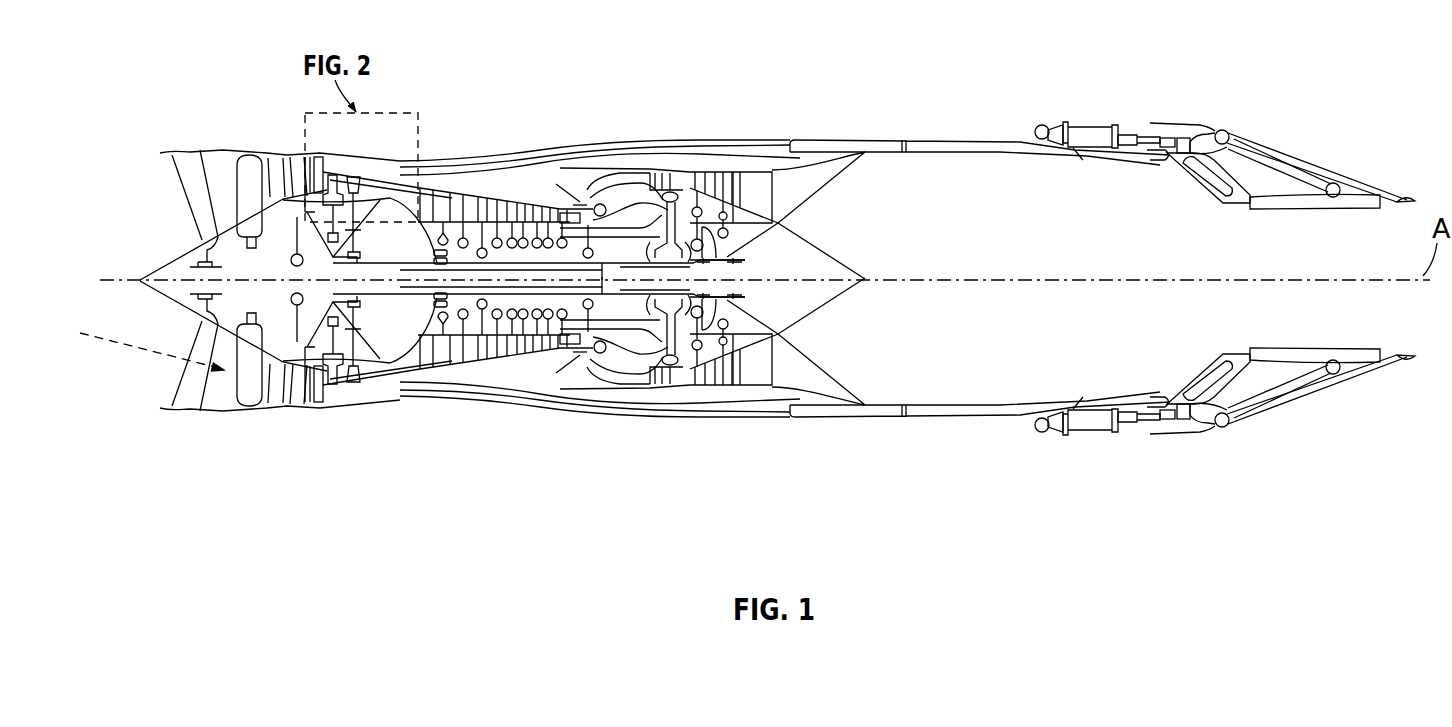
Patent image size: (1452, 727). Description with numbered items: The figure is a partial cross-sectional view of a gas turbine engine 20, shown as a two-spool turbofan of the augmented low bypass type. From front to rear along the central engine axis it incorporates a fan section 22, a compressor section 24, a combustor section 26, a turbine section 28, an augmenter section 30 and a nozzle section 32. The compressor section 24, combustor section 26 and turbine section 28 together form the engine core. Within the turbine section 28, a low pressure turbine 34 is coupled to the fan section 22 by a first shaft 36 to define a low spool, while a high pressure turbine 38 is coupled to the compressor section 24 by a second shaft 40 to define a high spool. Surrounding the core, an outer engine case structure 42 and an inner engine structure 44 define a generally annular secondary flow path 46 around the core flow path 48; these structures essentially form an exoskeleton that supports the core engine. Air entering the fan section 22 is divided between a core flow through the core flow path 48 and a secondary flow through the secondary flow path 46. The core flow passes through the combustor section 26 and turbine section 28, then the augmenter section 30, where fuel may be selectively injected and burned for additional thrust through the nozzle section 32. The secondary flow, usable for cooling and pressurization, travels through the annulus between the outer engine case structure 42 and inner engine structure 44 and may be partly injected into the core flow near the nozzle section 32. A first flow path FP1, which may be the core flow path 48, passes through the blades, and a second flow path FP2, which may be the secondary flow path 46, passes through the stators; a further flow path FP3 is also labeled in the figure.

The gas turbine engine 20 is at (1258, 35).
The fan section 22 is at (258, 433).
The compressor section 24 is at (478, 436).
The combustor section 26 is at (625, 421).
The turbine section 28 is at (738, 330).
The augmenter section 30 is at (842, 445).
The nozzle section 32 is at (1257, 457).
The low pressure turbine 34 is at (710, 385).
The first shaft 36 is at (383, 295).
The high pressure turbine 38 is at (667, 385).
The second shaft 40 is at (628, 287).
The outer engine case structure 42 is at (398, 400).
The inner engine structure 44 is at (475, 367).
The secondary flow path 46 is at (463, 398).
The core flow path 48 is at (393, 363).
The first flow path FP1 is at (400, 178).
The second flow path FP2 is at (475, 162).
The core flow path FP3 is at (388, 198).